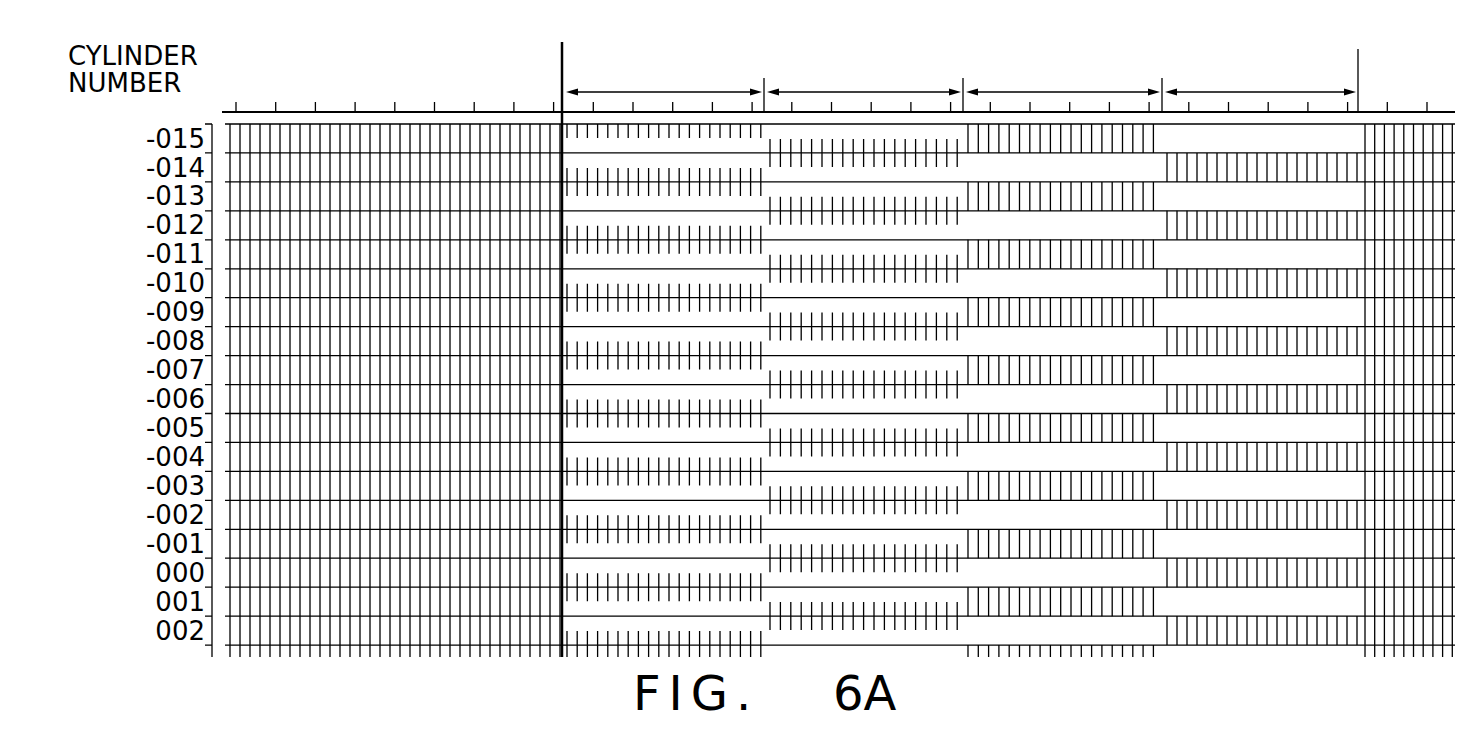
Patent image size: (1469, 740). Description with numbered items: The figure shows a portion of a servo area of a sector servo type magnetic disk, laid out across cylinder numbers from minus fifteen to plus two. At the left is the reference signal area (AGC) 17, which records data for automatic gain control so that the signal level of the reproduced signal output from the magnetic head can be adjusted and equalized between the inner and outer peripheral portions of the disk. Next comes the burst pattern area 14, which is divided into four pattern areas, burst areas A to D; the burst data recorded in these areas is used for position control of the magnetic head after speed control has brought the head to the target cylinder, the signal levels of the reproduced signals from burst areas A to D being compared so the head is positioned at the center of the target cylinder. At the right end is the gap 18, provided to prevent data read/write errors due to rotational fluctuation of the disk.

The reference signal area (AGC) 17 is at (552, 57).
The burst pattern area 14 is at (1346, 57).
The gap 18 is at (1455, 57).